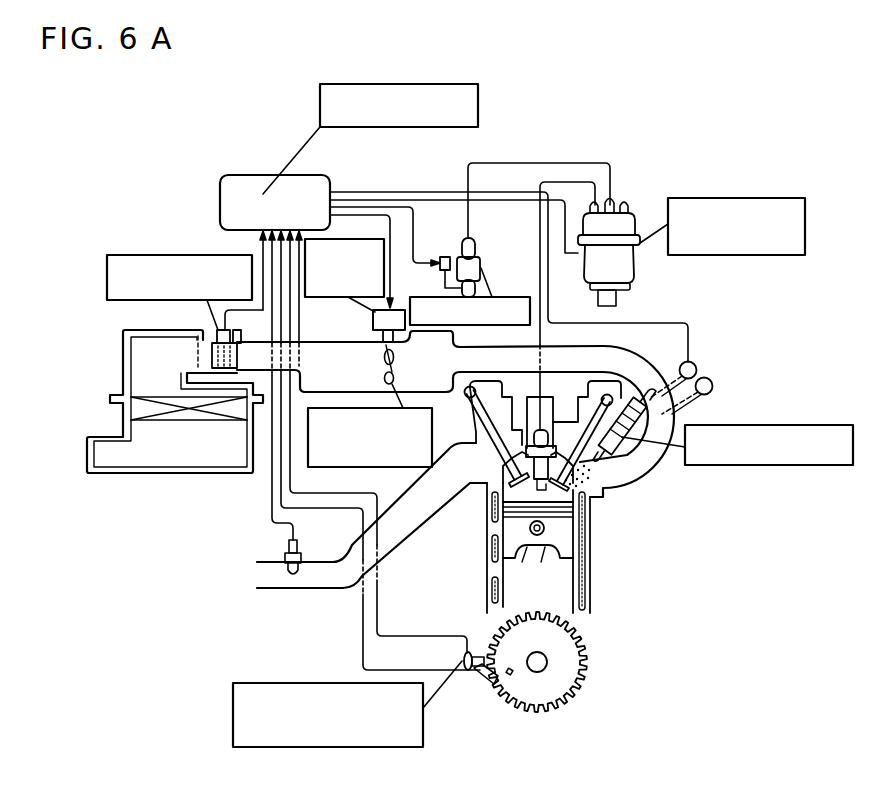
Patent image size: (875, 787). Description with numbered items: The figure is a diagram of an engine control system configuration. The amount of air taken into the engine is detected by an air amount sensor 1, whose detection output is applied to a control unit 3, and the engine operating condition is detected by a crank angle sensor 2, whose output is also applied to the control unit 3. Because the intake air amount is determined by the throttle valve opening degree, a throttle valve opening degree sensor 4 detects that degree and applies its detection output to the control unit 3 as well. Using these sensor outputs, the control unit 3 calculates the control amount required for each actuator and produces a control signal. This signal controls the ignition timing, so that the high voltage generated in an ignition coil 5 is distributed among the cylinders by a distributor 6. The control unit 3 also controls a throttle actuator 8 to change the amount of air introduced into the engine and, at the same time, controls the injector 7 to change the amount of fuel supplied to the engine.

The air amount sensor 1 is at (153, 255).
The crank angle sensor 2 is at (280, 683).
The control unit 3 is at (479, 107).
The throttle valve opening degree sensor 4 is at (433, 437).
The ignition coil 5 is at (481, 262).
The distributor 6 is at (742, 198).
The injector 7 is at (788, 425).
The throttle actuator 8 is at (343, 298).